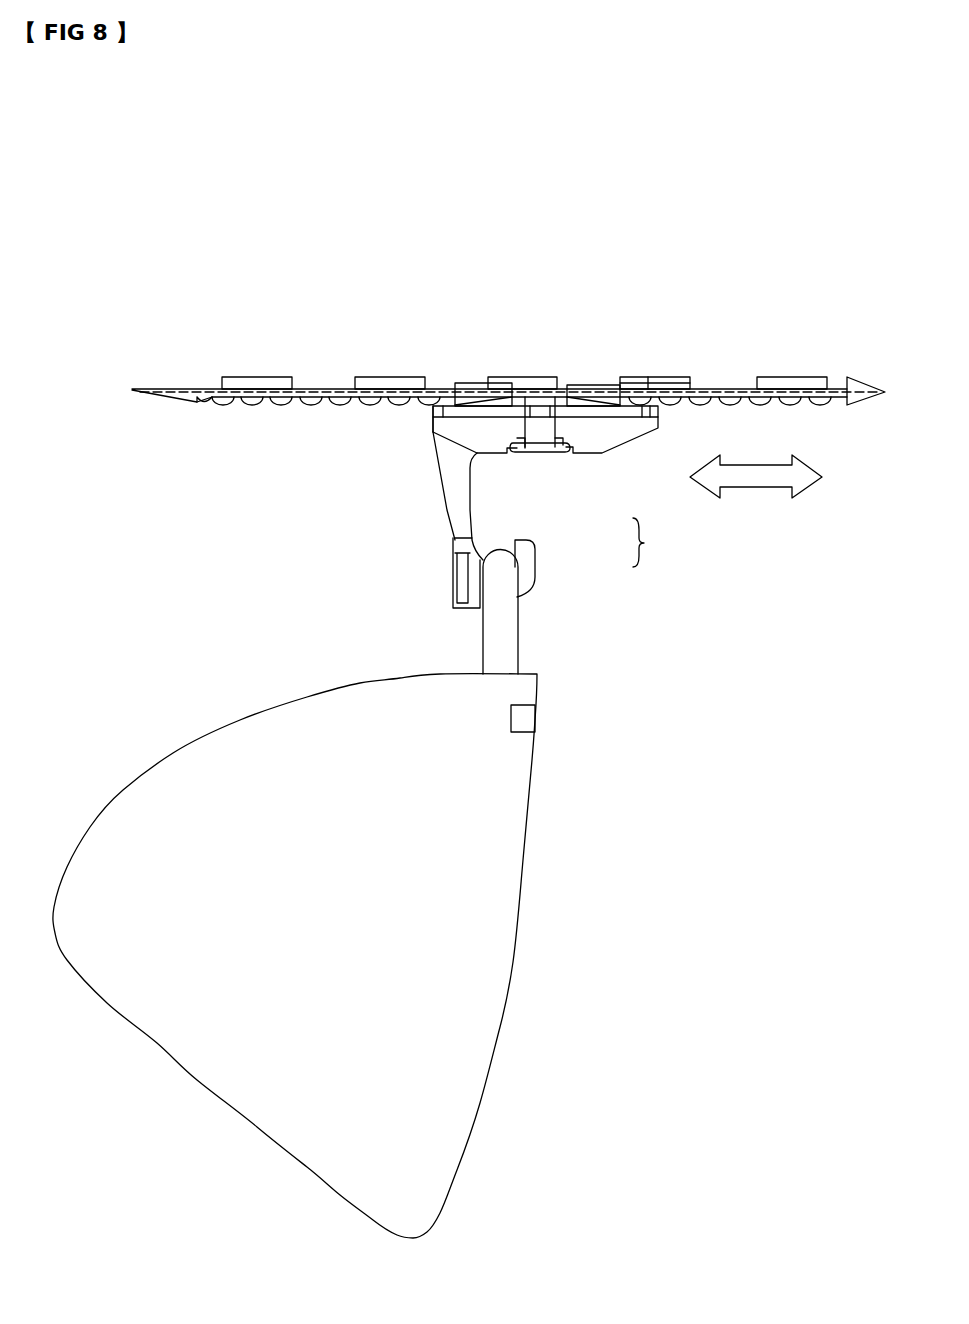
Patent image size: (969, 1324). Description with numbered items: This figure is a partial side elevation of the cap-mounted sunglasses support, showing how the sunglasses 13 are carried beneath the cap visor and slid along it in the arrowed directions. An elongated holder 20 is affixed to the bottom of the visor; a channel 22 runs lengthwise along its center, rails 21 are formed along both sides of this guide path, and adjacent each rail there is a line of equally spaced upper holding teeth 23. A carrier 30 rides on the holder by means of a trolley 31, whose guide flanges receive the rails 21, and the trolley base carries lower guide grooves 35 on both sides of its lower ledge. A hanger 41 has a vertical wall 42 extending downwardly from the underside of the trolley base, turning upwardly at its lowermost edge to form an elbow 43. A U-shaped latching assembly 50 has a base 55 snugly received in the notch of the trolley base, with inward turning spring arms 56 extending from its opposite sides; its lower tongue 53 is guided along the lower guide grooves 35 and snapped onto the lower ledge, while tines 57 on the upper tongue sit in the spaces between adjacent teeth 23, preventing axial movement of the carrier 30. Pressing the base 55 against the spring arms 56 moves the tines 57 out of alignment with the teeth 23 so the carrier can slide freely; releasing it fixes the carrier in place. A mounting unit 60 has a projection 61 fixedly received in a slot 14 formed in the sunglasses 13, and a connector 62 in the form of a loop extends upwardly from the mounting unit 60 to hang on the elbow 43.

The sunglasses 13 is at (225, 1049).
The slot 14 is at (523, 712).
The holder 20 is at (173, 413).
The rails 21 is at (303, 403).
The channel 22 is at (200, 395).
The upper holding teeth 23 is at (227, 402).
The carrier 30 is at (542, 575).
The trolley 31 is at (433, 415).
The lower guide grooves 35 is at (510, 434).
The hanger 41 is at (651, 542).
The vertical wall 42 is at (473, 503).
The elbow 43 is at (525, 558).
The latching assembly 50 is at (512, 460).
The lower tongue 53 is at (542, 450).
The base 55 is at (535, 452).
The spring arms 56 is at (455, 408).
The tines 57 is at (553, 397).
The mounting unit 60 is at (522, 632).
The projection 61 is at (524, 722).
The connector 62 is at (507, 613).